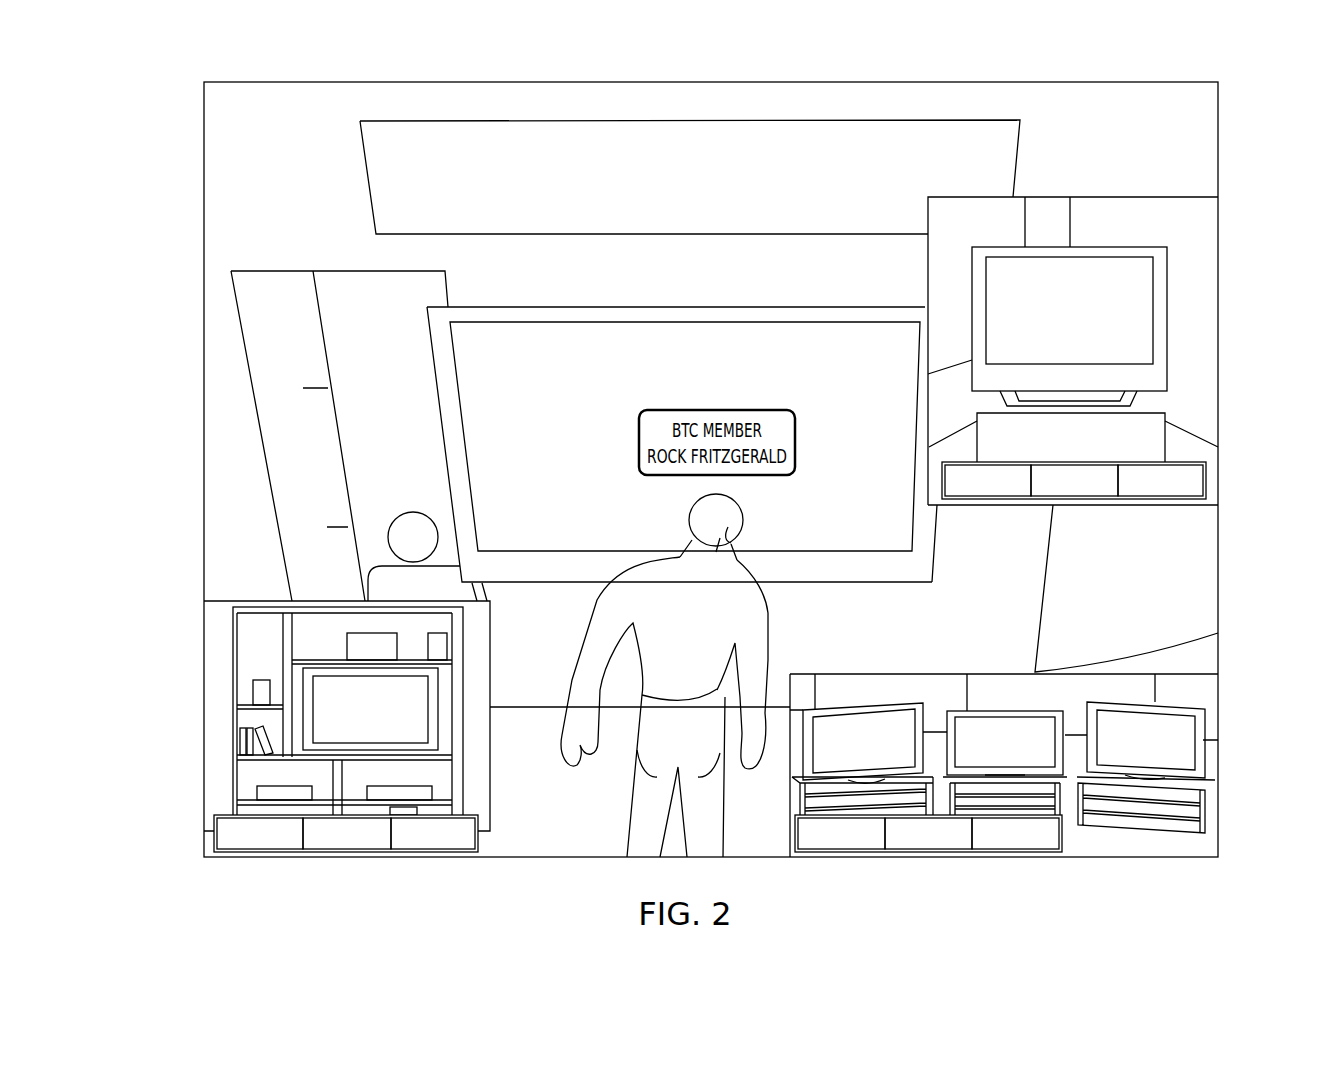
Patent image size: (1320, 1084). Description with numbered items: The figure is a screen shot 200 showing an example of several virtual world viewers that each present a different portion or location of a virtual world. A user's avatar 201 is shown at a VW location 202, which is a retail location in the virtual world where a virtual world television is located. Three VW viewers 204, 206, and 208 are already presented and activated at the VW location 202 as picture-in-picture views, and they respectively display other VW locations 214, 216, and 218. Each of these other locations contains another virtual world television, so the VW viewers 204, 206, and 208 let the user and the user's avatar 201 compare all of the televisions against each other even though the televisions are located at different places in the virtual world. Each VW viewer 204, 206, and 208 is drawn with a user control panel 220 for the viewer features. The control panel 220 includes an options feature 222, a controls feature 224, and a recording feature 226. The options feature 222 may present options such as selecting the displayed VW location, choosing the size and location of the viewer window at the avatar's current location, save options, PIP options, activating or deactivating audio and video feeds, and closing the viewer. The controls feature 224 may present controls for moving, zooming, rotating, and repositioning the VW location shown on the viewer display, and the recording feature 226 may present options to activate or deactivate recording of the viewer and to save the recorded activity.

The screen shot 200 is at (172, 158).
The user's avatar 201 is at (627, 812).
The VW location 202 is at (236, 341).
The VW viewer 204 is at (1007, 791).
The VW viewer 206 is at (1210, 283).
The VW viewer 208 is at (204, 655).
The VW location 214 is at (1180, 800).
The VW location 216 is at (1188, 357).
The VW location 218 is at (229, 729).
The user control panel 220 is at (213, 850).
The options feature 222 is at (258, 852).
The controls feature 224 is at (346, 852).
The recording feature 226 is at (435, 852).